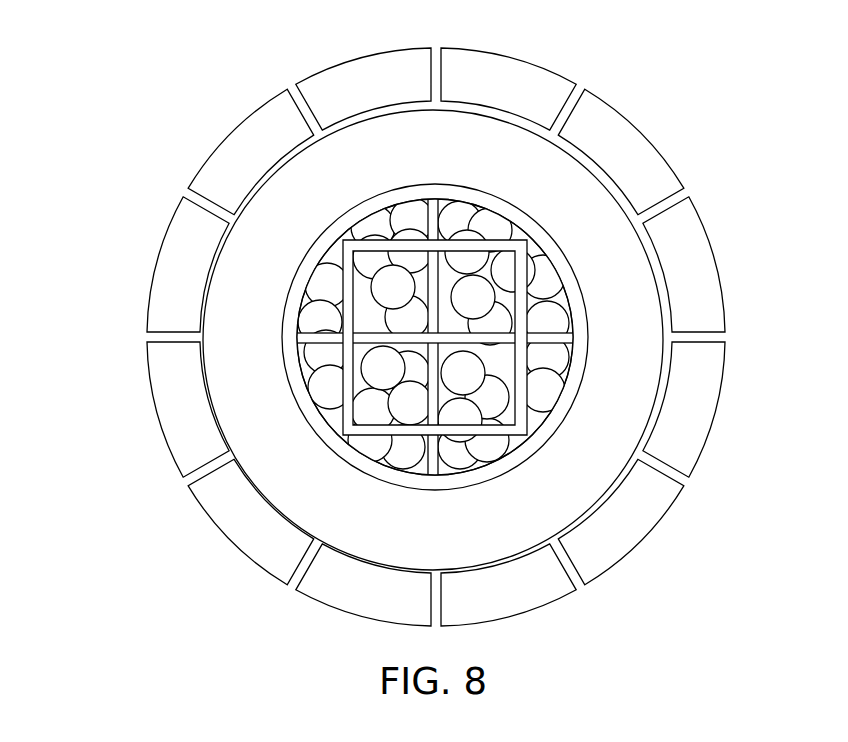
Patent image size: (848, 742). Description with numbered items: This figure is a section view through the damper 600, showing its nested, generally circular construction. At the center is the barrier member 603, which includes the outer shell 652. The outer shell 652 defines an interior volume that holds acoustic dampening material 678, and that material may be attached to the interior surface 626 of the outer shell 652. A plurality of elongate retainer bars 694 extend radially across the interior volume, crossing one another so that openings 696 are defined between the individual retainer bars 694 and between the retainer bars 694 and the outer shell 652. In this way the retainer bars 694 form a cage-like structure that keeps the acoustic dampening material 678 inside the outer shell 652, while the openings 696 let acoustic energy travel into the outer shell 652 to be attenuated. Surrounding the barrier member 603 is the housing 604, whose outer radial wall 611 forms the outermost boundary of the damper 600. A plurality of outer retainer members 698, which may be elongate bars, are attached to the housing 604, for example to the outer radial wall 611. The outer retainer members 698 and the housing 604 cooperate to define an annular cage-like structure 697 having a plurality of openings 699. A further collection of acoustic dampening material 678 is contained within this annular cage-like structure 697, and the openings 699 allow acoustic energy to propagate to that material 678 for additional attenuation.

The damper 600 is at (732, 180).
The barrier member 603 is at (429, 173).
The housing 604 is at (125, 452).
The outer radial wall 611 is at (321, 609).
The interior surface 626 is at (493, 224).
The outer shell 652 is at (327, 233).
The acoustic dampening material 678 is at (168, 275).
The elongate retainer bars 694 is at (397, 432).
The openings 696 is at (497, 297).
The annular cage-like structure 697 is at (448, 72).
The outer retainer members 698 is at (287, 110).
The openings 699 is at (385, 90).